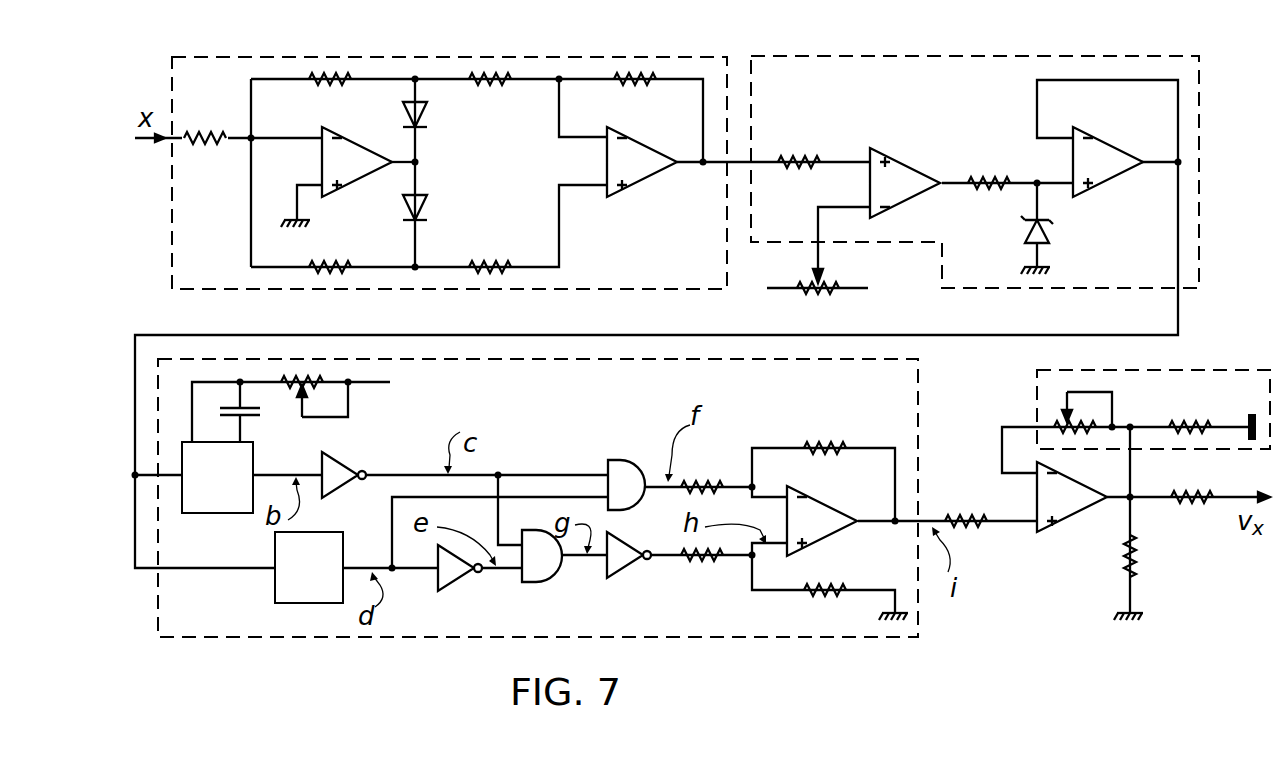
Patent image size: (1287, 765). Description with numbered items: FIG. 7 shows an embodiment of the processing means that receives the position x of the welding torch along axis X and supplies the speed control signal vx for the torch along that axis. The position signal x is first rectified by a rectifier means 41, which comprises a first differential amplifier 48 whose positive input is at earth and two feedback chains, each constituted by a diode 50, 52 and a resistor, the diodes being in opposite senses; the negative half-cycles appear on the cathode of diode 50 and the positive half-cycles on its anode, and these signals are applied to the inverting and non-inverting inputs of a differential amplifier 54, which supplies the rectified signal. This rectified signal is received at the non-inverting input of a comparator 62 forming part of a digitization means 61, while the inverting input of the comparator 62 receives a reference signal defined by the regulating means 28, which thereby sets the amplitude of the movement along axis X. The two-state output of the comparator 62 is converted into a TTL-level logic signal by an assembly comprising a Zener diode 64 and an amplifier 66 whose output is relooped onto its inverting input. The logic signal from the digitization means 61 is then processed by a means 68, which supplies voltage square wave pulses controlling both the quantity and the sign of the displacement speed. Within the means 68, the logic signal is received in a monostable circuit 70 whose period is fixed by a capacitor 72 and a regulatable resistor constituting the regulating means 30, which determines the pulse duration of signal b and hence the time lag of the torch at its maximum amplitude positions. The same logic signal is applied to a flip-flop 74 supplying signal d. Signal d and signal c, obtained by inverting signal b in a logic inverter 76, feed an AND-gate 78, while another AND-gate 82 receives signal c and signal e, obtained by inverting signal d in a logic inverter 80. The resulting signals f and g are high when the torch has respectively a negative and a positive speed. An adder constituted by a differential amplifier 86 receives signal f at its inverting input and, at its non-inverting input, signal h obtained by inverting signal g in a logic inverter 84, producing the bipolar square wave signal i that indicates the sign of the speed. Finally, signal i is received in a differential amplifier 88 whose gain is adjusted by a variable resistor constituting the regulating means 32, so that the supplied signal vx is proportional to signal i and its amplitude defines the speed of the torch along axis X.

The rectifier means 41 is at (228, 296).
The first differential amplifier 48 is at (366, 178).
The diode 50 is at (428, 115).
The diode 52 is at (428, 207).
The differential amplifier 54 is at (645, 178).
The digitization means 61 is at (1199, 250).
The comparator 62 is at (895, 163).
The Zener diode 64 is at (1026, 228).
The amplifier 66 is at (1110, 173).
The regulating means 28 is at (828, 293).
The logic means 68 is at (845, 638).
The monostable circuit 70 is at (215, 514).
The capacitor 72 is at (253, 417).
The regulating means 30 is at (330, 368).
The logic inverter 76 is at (352, 458).
The flip-flop 74 is at (283, 590).
The AND-gate 78 is at (622, 465).
The logic inverter 80 is at (447, 584).
The AND-gate 82 is at (555, 575).
The logic inverter 84 is at (640, 577).
The differential amplifier 86 is at (823, 520).
The differential amplifier 88 is at (1077, 505).
The regulating means 32 is at (1037, 375).